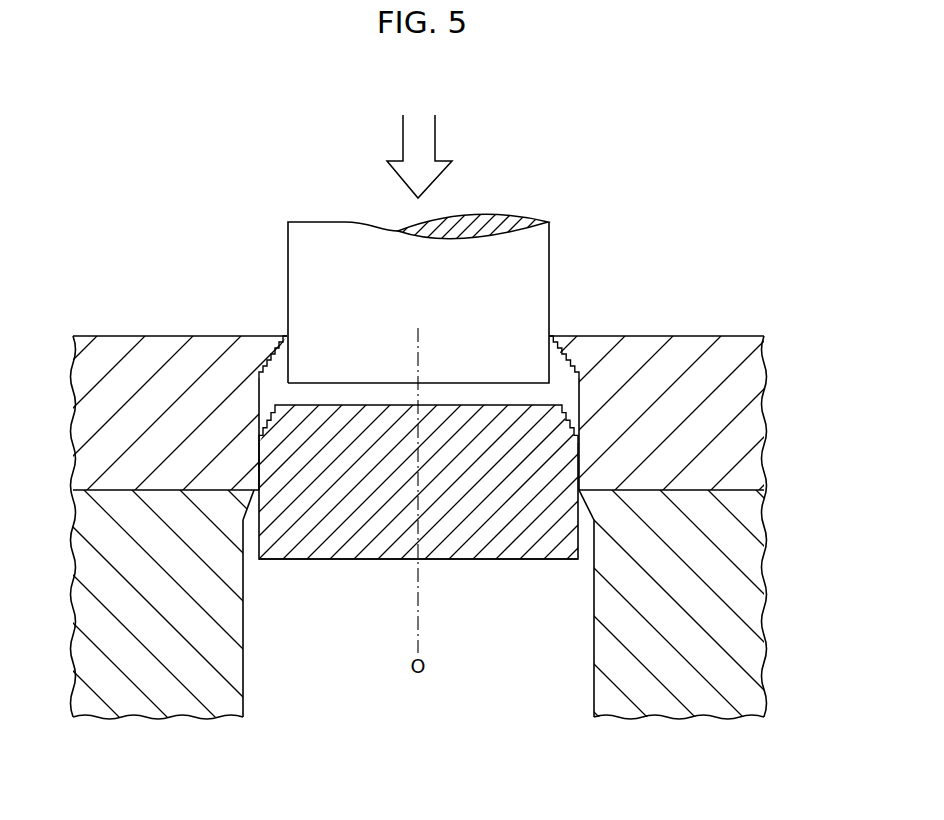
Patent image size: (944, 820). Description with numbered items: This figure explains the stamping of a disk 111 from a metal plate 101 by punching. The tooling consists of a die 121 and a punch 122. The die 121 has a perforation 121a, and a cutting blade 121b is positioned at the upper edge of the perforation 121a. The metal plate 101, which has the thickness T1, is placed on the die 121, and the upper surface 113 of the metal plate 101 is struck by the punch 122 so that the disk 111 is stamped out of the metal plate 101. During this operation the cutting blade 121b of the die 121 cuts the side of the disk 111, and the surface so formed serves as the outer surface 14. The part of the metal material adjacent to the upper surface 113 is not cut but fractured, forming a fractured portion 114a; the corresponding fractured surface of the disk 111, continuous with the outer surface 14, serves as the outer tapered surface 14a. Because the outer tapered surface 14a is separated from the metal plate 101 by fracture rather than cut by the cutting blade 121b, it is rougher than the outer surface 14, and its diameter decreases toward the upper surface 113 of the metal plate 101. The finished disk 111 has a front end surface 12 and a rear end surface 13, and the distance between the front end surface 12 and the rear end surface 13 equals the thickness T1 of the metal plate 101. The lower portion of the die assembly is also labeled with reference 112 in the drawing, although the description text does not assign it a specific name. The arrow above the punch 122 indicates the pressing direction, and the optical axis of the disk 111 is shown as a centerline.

The metal plate 101 is at (744, 350).
The disk 111 is at (367, 562).
The lower die member 112 is at (117, 493).
The upper surface 113 is at (168, 336).
The fractured portion 114a is at (286, 352).
The front end surface 12 is at (483, 560).
The die 121 is at (753, 603).
The perforation 121a is at (243, 687).
The cutting blade 121b is at (252, 497).
The punch 122 is at (522, 252).
The rear end surface 13 is at (378, 403).
The outer surface 14 is at (580, 522).
The outer tapered surface 14a is at (583, 382).